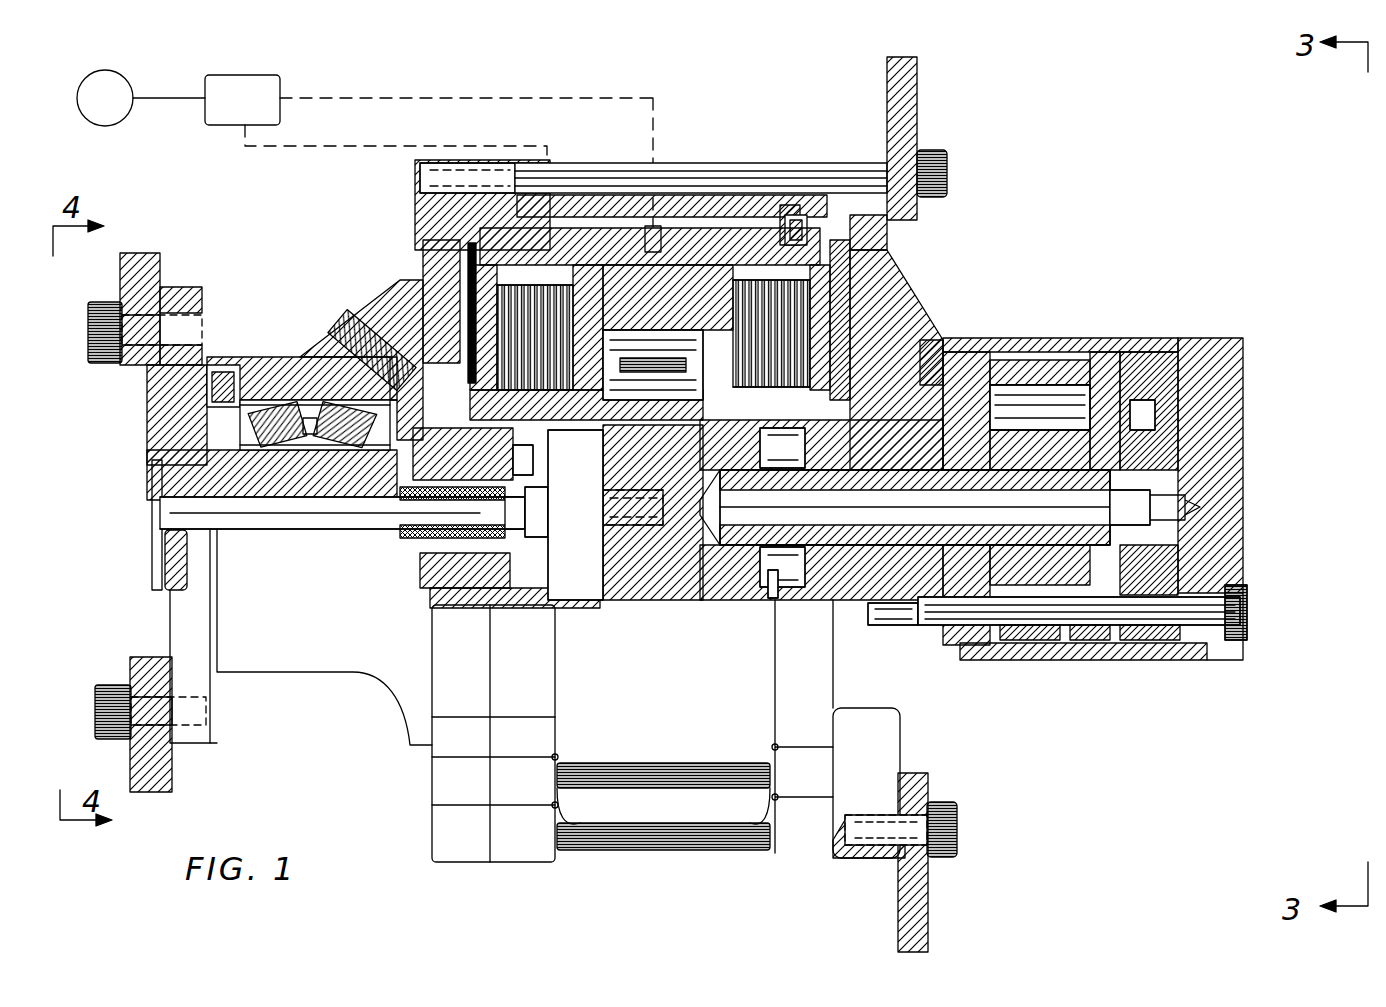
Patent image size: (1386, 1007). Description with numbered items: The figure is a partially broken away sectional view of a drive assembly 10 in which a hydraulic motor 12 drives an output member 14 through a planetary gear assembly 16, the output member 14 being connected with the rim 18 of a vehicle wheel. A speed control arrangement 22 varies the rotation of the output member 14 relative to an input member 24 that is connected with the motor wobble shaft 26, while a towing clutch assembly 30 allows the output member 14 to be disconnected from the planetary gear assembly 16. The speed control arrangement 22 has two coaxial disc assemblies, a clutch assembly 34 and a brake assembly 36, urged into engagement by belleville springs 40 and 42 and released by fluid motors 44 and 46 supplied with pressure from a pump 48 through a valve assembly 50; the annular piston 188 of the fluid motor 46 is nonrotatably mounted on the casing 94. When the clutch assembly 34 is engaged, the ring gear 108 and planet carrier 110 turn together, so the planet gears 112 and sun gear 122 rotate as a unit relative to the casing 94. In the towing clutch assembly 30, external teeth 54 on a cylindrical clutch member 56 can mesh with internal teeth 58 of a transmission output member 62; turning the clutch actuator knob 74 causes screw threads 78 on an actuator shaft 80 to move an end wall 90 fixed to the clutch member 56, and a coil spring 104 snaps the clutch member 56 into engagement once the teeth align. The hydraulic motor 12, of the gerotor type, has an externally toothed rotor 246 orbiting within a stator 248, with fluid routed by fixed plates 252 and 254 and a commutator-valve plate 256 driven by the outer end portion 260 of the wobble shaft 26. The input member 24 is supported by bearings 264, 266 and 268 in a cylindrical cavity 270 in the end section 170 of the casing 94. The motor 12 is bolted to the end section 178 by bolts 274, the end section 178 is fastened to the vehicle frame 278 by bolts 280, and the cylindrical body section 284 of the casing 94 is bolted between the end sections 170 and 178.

The drive assembly 10 is at (1178, 140).
The hydraulic motor 12 is at (1252, 402).
The output member 14 is at (198, 288).
The planetary gear assembly 16 is at (670, 300).
The rim 18 is at (150, 254).
The speed control arrangement 22 is at (858, 283).
The input member 24 is at (783, 462).
The wobble shaft 26 is at (903, 400).
The towing clutch assembly 30 is at (412, 622).
The clutch assembly 34 is at (465, 282).
The brake assembly 36 is at (848, 322).
The belleville spring 40 is at (440, 305).
The belleville spring 42 is at (937, 340).
The fluid motor 44 is at (488, 210).
The fluid motor 46 is at (830, 218).
The pump 48 is at (168, 62).
The valve assembly 50 is at (312, 63).
The teeth 54 is at (413, 607).
The clutch member 56 is at (393, 568).
The teeth 58 is at (557, 587).
The transmission output member 62 is at (420, 417).
The clutch actuator knob 74 is at (150, 505).
The screw threads 78 is at (555, 520).
The actuator shaft 80 is at (227, 505).
The end wall 90 is at (523, 573).
The casing 94 is at (425, 858).
The coil spring 104 is at (390, 517).
The ring gear 108 is at (640, 224).
The planet carrier 110 is at (590, 402).
The planet gears 112 is at (750, 226).
The sun gear 122 is at (702, 563).
The end section 170 is at (297, 660).
The end section 178 is at (847, 853).
The piston 188 is at (800, 205).
The rotor 246 is at (992, 640).
The stator 248 is at (1078, 612).
The fixed plate 252 is at (1107, 633).
The fixed plate 254 is at (1143, 637).
The commutator-valve plate 256 is at (1180, 548).
The outer end portion 260 is at (1183, 483).
The bearing 264 is at (748, 578).
The bearing 266 is at (920, 602).
The bearing 268 is at (773, 598).
The cylindrical cavity 270 is at (855, 578).
The bolts 274 is at (1247, 600).
The frame 278 is at (905, 77).
The bolts 280 is at (948, 176).
The body section 284 is at (627, 742).